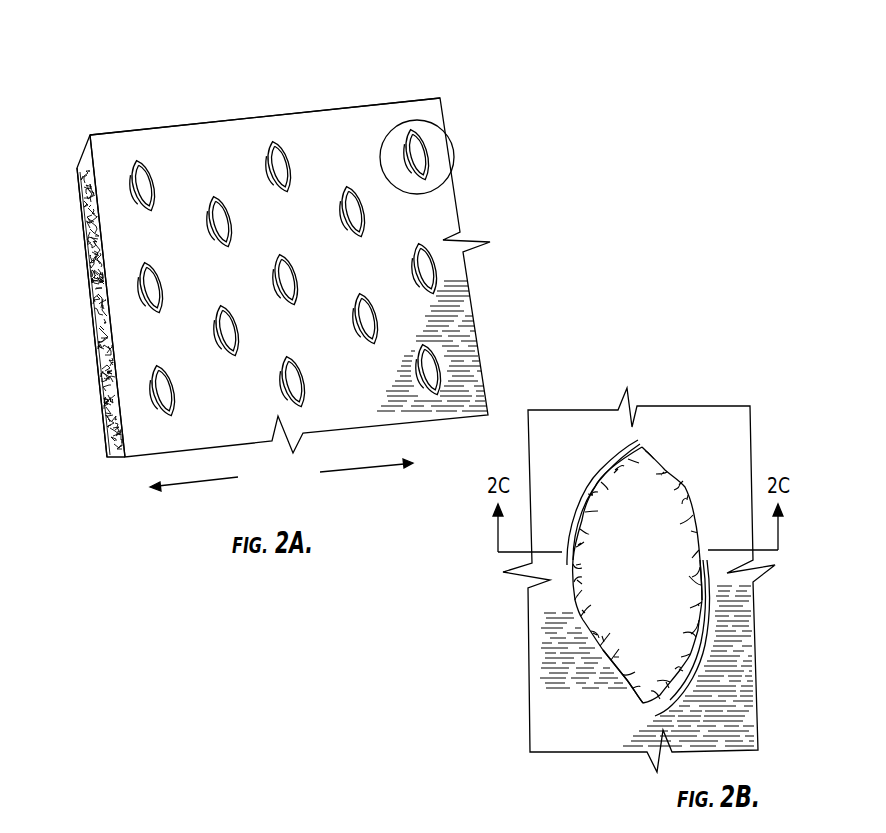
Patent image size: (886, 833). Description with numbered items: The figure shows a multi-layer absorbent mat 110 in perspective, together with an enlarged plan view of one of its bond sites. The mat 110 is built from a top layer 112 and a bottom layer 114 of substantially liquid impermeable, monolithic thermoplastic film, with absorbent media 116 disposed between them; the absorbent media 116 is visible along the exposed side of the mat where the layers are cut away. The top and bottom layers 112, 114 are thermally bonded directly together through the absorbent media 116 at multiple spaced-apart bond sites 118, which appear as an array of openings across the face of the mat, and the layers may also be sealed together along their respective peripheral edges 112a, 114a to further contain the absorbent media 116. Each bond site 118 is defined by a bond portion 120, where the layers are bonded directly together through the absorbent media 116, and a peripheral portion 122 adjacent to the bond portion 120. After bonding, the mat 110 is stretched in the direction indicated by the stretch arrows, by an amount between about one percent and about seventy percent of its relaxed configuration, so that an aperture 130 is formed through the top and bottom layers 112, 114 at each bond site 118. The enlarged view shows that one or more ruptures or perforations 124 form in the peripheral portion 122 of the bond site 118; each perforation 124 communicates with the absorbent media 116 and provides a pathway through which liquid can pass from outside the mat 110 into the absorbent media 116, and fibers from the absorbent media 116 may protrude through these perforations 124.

In FIG. 2A, the multi-layer absorbent mat 110 is at (381, 72).
In FIG. 2A, the top layer 112 is at (332, 125).
In FIG. 2B, the top layer 112 is at (700, 420).
In FIG. 2A, the peripheral edge of top layer 112a is at (292, 113).
In FIG. 2A, the bottom layer 114 is at (95, 362).
In FIG. 2A, the peripheral edge of bottom layer 114a is at (93, 345).
In FIG. 2A, the absorbent media 116 is at (92, 223).
In FIG. 2A, the bond site 118 is at (160, 268).
In FIG. 2B, the bond site 118 is at (656, 434).
In FIG. 2B, the bond portion 120 is at (612, 687).
In FIG. 2B, the peripheral portion 122 is at (600, 663).
In FIG. 2B, the perforation 124 is at (687, 486).
In FIG. 2B, the aperture 130 is at (654, 609).